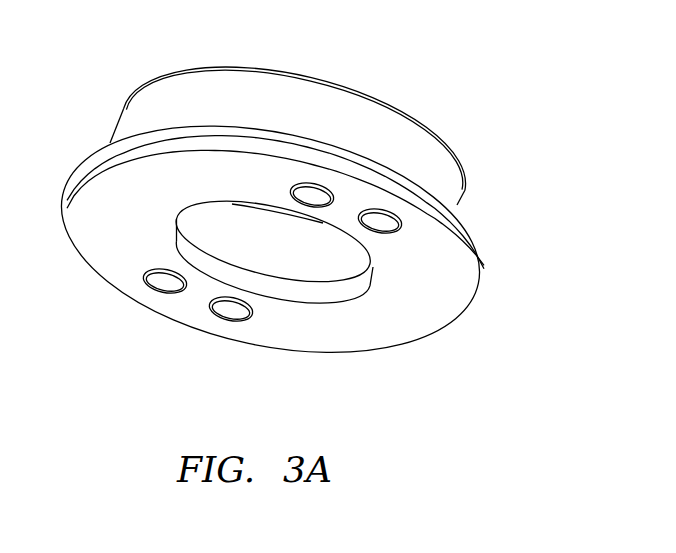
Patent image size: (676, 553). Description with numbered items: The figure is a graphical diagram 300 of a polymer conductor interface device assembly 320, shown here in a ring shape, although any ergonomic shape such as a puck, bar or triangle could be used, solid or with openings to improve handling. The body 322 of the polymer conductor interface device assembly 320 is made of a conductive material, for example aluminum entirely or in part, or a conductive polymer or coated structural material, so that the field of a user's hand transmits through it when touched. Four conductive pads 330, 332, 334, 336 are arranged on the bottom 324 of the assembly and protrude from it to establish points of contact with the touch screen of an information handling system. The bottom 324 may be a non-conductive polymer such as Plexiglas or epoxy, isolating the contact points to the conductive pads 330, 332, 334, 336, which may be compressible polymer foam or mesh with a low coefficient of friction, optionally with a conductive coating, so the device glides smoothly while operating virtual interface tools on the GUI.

The graphical diagram 300 is at (297, 214).
The polymer conductor interface device assembly 320 is at (122, 110).
The body 322 is at (449, 168).
The bottom 324 is at (475, 256).
The conductive pad 330 is at (384, 216).
The conductive pad 332 is at (314, 192).
The conductive pad 334 is at (158, 286).
The conductive pad 336 is at (228, 315).